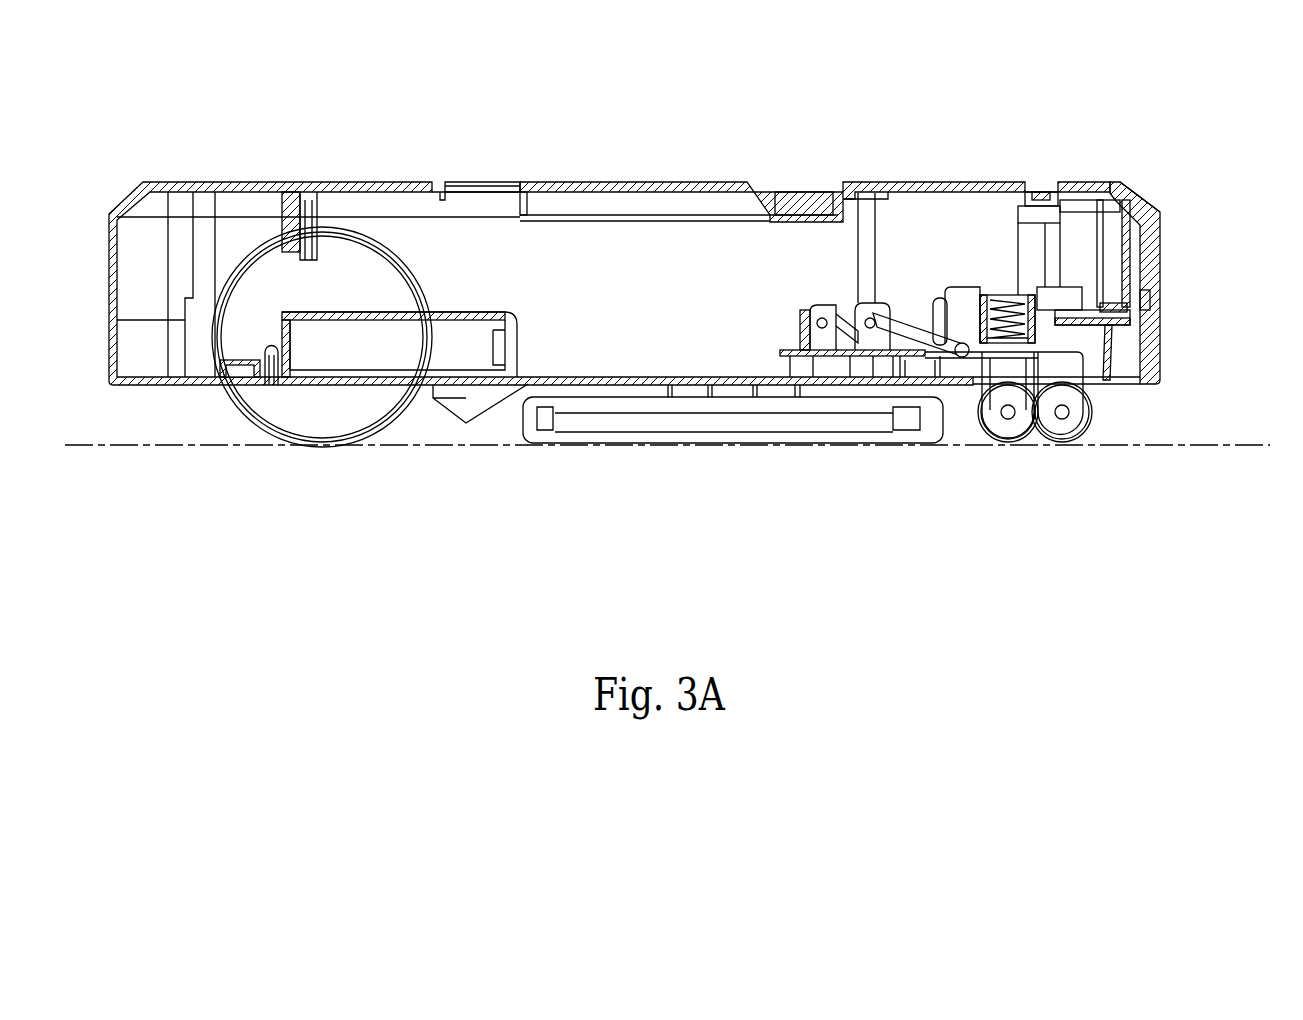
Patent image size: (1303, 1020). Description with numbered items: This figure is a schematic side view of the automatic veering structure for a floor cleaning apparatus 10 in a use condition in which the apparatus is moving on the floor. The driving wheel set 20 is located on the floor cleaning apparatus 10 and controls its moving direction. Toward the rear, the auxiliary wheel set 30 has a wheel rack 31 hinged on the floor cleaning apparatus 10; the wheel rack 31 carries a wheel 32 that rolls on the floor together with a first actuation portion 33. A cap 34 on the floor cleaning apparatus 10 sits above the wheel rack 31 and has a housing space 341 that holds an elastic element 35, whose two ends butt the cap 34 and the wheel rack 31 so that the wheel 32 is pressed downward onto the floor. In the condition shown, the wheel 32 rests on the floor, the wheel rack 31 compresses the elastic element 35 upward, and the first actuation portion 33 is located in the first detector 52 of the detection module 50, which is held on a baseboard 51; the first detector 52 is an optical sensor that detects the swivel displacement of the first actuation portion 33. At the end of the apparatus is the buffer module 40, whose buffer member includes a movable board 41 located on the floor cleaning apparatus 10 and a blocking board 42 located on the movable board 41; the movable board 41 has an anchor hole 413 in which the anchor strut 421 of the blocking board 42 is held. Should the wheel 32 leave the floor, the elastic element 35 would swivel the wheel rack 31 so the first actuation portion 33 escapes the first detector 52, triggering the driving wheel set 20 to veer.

The floor cleaning apparatus 10 is at (398, 178).
The driving wheel set 20 is at (254, 427).
The auxiliary wheel set 30 is at (1040, 431).
The wheel rack 31 is at (1068, 420).
The wheel 32 is at (1048, 437).
The first actuation portion 33 is at (873, 300).
The cap 34 is at (985, 293).
The elastic element 35 is at (1003, 298).
The housing space 341 is at (1030, 298).
The buffer module 40 is at (1166, 280).
The movable board 41 is at (1158, 320).
The anchor hole 413 is at (1150, 335).
The blocking board 42 is at (1158, 262).
The anchor strut 421 is at (1152, 216).
The detection module 50 is at (840, 386).
The baseboard 51 is at (785, 351).
The first detector 52 is at (860, 307).